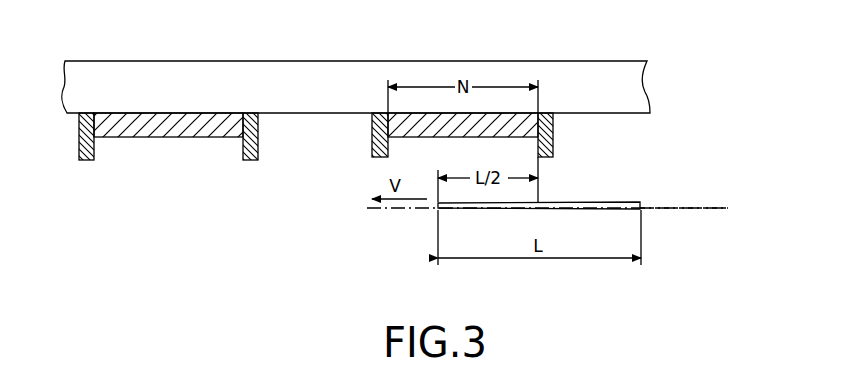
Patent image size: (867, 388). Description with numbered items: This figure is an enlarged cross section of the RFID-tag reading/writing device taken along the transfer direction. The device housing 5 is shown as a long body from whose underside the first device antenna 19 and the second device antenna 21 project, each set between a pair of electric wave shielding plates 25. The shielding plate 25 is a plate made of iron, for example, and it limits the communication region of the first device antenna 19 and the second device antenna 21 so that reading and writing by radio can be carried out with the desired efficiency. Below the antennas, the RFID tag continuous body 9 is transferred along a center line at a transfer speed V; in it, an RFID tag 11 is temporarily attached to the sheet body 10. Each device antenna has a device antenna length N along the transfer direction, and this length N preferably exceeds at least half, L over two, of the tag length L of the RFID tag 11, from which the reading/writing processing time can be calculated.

The device housing 5 is at (463, 61).
The second device antenna 21 is at (167, 137).
The electric wave shielding plate 25 is at (258, 138).
The first device antenna 19 is at (440, 137).
The RFID tag 11 is at (593, 202).
The RFID tag continuous body 9 is at (677, 206).
The sheet body 10 is at (698, 211).